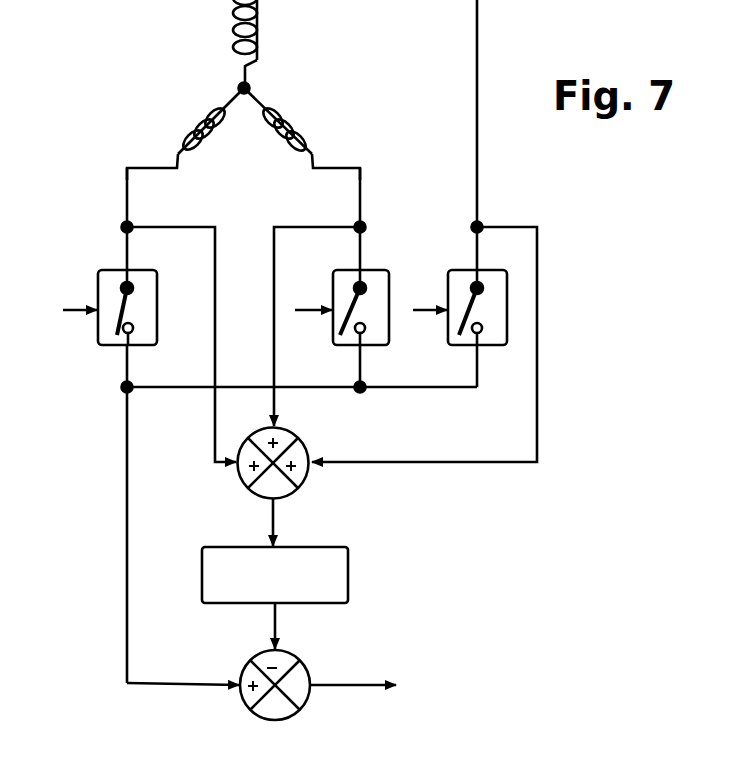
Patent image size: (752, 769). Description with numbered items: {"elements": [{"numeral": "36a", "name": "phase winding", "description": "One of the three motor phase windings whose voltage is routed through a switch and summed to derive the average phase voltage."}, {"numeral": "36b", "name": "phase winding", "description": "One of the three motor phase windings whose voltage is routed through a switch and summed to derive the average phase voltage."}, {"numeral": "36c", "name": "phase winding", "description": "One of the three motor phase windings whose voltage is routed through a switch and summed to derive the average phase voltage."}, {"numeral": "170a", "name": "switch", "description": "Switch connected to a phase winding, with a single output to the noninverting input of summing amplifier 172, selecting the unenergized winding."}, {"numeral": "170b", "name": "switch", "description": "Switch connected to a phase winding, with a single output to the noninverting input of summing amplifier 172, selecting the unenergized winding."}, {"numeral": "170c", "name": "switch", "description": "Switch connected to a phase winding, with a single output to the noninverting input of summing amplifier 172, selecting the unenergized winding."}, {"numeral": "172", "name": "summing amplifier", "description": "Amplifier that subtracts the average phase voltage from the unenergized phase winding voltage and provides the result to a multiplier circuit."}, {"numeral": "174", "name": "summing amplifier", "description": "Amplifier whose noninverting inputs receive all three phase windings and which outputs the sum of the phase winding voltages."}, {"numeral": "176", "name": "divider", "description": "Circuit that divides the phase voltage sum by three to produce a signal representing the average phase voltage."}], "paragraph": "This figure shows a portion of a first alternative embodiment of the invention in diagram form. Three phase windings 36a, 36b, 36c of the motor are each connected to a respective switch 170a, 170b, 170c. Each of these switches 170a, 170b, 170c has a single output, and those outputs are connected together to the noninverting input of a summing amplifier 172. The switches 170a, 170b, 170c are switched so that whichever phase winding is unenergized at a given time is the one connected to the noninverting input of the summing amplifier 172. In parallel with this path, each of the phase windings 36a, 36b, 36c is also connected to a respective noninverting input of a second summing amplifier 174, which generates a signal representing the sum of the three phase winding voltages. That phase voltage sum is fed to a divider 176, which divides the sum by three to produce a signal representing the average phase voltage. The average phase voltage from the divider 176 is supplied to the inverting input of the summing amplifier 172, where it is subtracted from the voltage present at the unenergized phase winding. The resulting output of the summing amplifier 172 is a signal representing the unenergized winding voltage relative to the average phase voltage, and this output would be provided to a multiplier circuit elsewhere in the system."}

The motor winding phase a 36a is at (257, 20).
The motor winding phase b 36b is at (180, 140).
The motor winding phase c 36c is at (313, 140).
The switch for phase a 170a is at (453, 270).
The switch for phase b 170b is at (108, 270).
The switch for phase c 170c is at (389, 300).
The subtractor / summing junction 172 is at (267, 718).
The summing junction 174 is at (298, 485).
The divider 176 is at (348, 593).